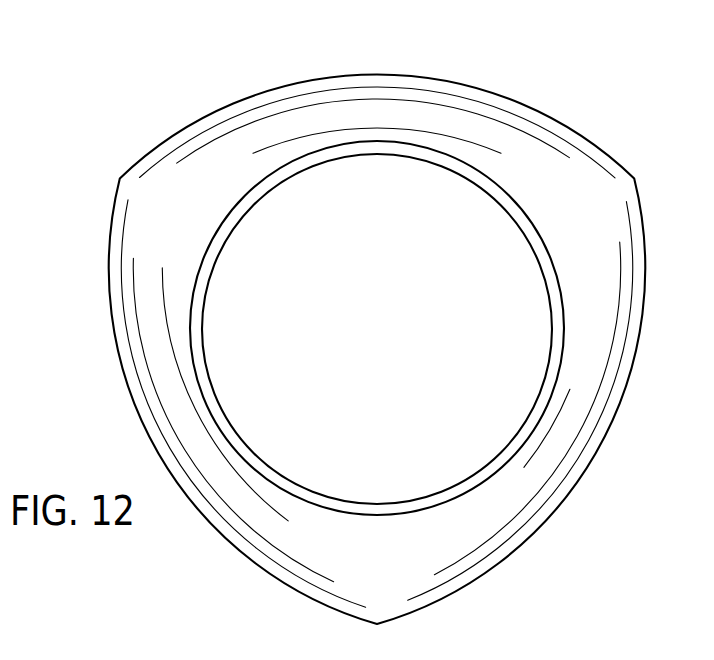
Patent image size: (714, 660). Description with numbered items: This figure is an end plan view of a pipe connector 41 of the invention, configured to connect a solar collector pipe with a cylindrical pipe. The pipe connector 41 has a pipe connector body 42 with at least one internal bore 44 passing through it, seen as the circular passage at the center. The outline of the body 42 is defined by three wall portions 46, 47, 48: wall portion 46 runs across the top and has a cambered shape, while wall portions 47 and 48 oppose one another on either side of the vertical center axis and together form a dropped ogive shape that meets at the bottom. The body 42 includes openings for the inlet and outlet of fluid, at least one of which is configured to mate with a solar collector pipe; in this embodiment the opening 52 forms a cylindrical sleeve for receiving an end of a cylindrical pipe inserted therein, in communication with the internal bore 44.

The pipe connector 41 is at (360, 320).
The pipe connector body 42 is at (130, 340).
The internal bore 44 is at (393, 323).
The wall portion 46 is at (443, 78).
The wall portion 47 is at (217, 533).
The wall portion 48 is at (595, 457).
The opening 52 is at (212, 267).